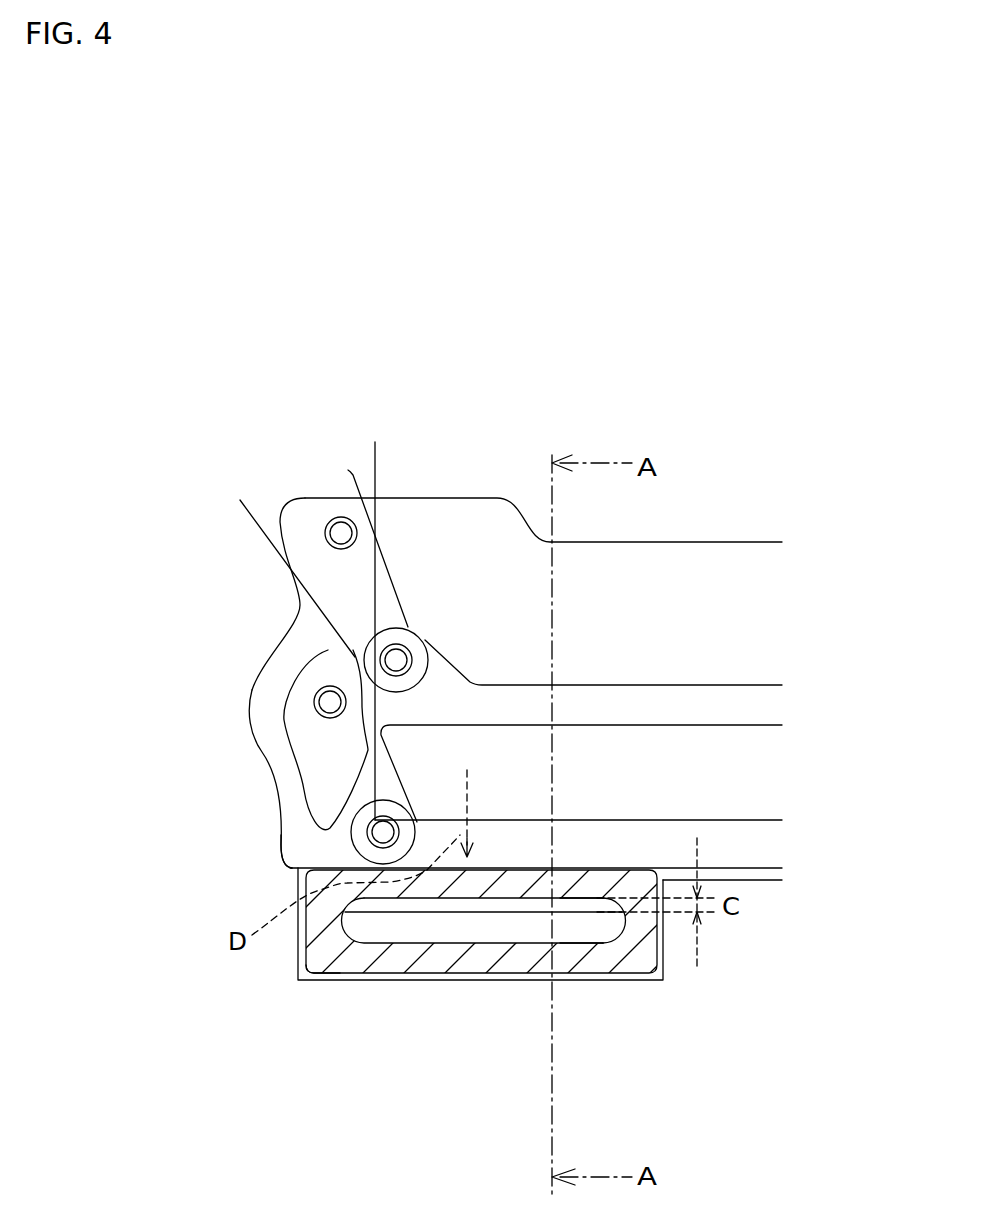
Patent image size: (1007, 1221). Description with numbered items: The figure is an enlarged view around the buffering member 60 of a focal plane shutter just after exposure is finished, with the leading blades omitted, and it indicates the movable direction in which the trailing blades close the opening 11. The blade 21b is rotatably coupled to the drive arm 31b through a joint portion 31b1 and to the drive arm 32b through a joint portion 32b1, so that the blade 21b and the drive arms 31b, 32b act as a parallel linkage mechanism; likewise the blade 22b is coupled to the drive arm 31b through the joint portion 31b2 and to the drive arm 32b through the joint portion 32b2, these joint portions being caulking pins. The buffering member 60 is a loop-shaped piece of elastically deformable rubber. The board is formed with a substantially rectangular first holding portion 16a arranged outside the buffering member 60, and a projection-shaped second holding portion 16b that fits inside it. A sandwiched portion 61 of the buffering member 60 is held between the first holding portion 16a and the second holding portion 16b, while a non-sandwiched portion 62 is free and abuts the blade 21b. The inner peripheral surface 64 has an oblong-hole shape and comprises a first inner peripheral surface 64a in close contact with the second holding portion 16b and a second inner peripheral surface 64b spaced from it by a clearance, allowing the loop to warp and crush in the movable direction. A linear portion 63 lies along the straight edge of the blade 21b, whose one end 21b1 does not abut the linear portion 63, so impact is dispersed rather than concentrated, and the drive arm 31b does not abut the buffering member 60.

The opening 11 is at (722, 817).
The first holding portion 16a is at (322, 968).
The second holding portion 16b is at (475, 927).
The blade 21b is at (285, 847).
The one end of the edge portion 21b1 is at (282, 858).
The blade 22b is at (285, 765).
The drive arm 31b is at (314, 725).
The joint portion 31b1 is at (383, 832).
The joint portion 31b2 is at (329, 702).
The drive arm 32b is at (240, 500).
The joint portion 32b1 is at (395, 660).
The joint portion 32b2 is at (340, 534).
The buffering member 60 is at (650, 977).
The sandwiched portion 61 is at (430, 960).
The non-sandwiched portion 62 is at (393, 887).
The linear portion 63 is at (510, 862).
The inner peripheral surface 64 is at (662, 1090).
The first inner peripheral surface 64a is at (572, 937).
The second inner peripheral surface 64b is at (598, 900).